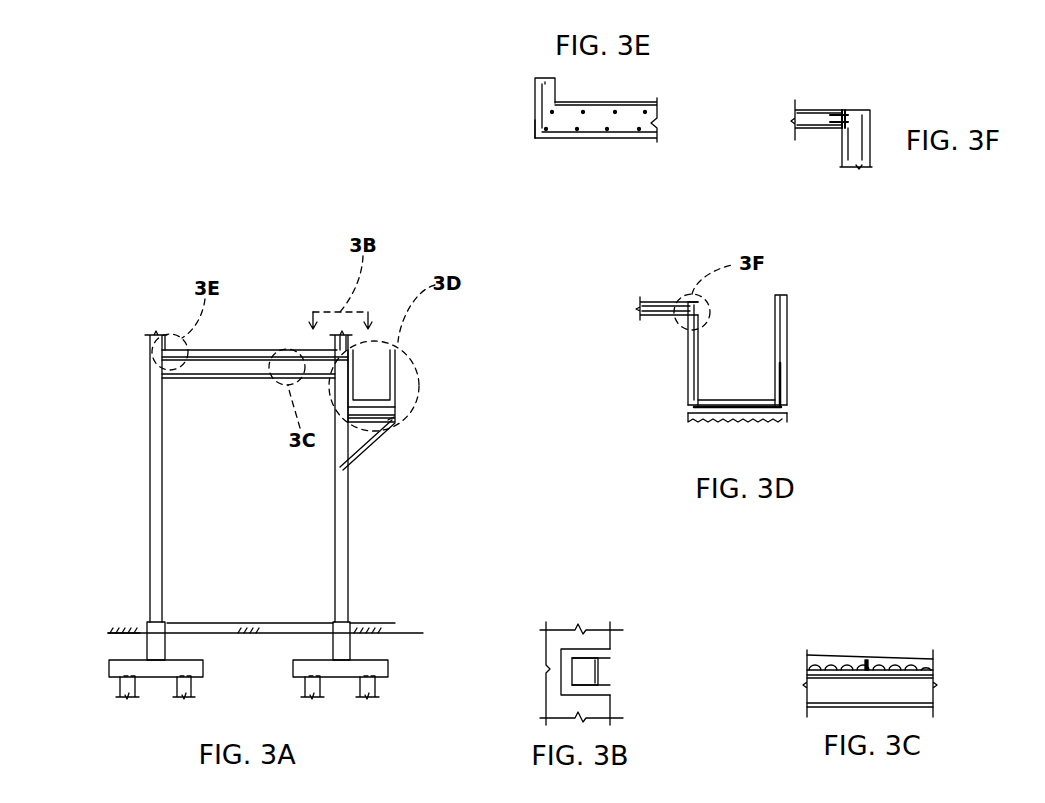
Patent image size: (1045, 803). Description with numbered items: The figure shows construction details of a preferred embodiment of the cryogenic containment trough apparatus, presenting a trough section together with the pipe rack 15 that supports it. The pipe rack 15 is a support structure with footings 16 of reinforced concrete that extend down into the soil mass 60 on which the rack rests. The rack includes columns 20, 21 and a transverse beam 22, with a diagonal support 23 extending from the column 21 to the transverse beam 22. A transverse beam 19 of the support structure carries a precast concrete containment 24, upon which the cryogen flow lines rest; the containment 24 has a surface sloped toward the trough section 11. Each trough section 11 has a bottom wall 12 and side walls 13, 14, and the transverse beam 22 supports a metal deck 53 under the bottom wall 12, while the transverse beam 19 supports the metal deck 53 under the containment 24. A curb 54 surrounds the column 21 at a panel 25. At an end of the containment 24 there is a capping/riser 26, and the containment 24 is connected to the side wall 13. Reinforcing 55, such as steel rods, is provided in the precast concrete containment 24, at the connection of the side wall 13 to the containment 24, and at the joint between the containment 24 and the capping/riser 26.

In FIG. 3A, the trough section 11 is at (400, 380).
In FIG. 3D, the trough section 11 is at (787, 330).
In FIG. 3D, the bottom wall 12 is at (745, 410).
In FIG. 3F, the side wall 13 is at (870, 155).
In FIG. 3D, the side wall 13 is at (688, 368).
In FIG. 3D, the side wall 14 is at (787, 357).
In FIG. 3A, the pipe rack 15 is at (163, 530).
In FIG. 3A, the footings 16 is at (109, 668).
In FIG. 3A, the transverse beam 19 is at (237, 378).
In FIG. 3C, the transverse beam 19 is at (930, 697).
In FIG. 3A, the column 20 is at (152, 447).
In FIG. 3A, the column 21 is at (348, 553).
In FIG. 3B, the column 21 is at (600, 672).
In FIG. 3A, the transverse beam 22 is at (388, 427).
In FIG. 3A, the diagonal support 23 is at (380, 447).
In FIG. 3A, the precast concrete containment 24 is at (265, 352).
In FIG. 3E, the precast concrete containment 24 is at (618, 140).
In FIG. 3F, the precast concrete containment 24 is at (820, 110).
In FIG. 3D, the precast concrete containment 24 is at (645, 302).
In FIG. 3C, the precast concrete containment 24 is at (843, 655).
In FIG. 3B, the panel 25 is at (546, 637).
In FIG. 3A, the capping/riser 26 is at (168, 340).
In FIG. 3E, the capping/riser 26 is at (535, 82).
In FIG. 3D, the metal deck 53 is at (770, 422).
In FIG. 3C, the metal deck 53 is at (893, 670).
In FIG. 3A, the curb 54 is at (340, 346).
In FIG. 3B, the curb 54 is at (587, 650).
In FIG. 3E, the reinforcing 55 is at (528, 127).
In FIG. 3F, the reinforcing 55 is at (846, 104).
In FIG. 3A, the soil mass 60 is at (125, 630).